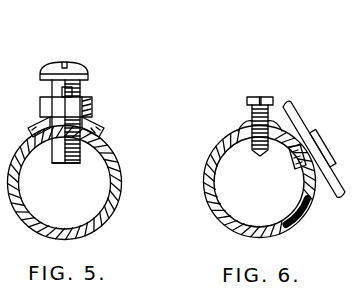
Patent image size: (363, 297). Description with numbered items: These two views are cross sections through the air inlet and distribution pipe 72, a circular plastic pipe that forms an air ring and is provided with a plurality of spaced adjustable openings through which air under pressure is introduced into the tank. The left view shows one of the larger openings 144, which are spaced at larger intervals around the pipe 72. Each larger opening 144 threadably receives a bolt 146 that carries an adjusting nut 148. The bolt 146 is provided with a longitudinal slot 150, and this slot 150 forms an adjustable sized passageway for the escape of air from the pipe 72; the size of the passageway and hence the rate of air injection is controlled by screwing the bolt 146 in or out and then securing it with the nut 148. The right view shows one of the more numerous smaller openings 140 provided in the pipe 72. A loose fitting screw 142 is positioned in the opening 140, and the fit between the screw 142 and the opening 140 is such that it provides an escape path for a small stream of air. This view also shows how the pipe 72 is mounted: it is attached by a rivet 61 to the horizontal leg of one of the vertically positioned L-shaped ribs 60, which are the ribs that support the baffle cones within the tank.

In FIG. 5, the air inlet and distribution pipe 72 is at (118, 170).
In FIG. 6, the air inlet and distribution pipe 72 is at (203, 203).
In FIG. 5, the bolt 146 is at (80, 63).
In FIG. 5, the adjusting nut 148 is at (92, 100).
In FIG. 5, the larger opening 144 is at (100, 123).
In FIG. 5, the longitudinal slot 150 is at (63, 165).
In FIG. 6, the loose fitting screw 142 is at (268, 97).
In FIG. 6, the opening 140 is at (250, 119).
In FIG. 6, the rivet 61 is at (316, 133).
In FIG. 6, the L-shaped rib 60 is at (325, 198).